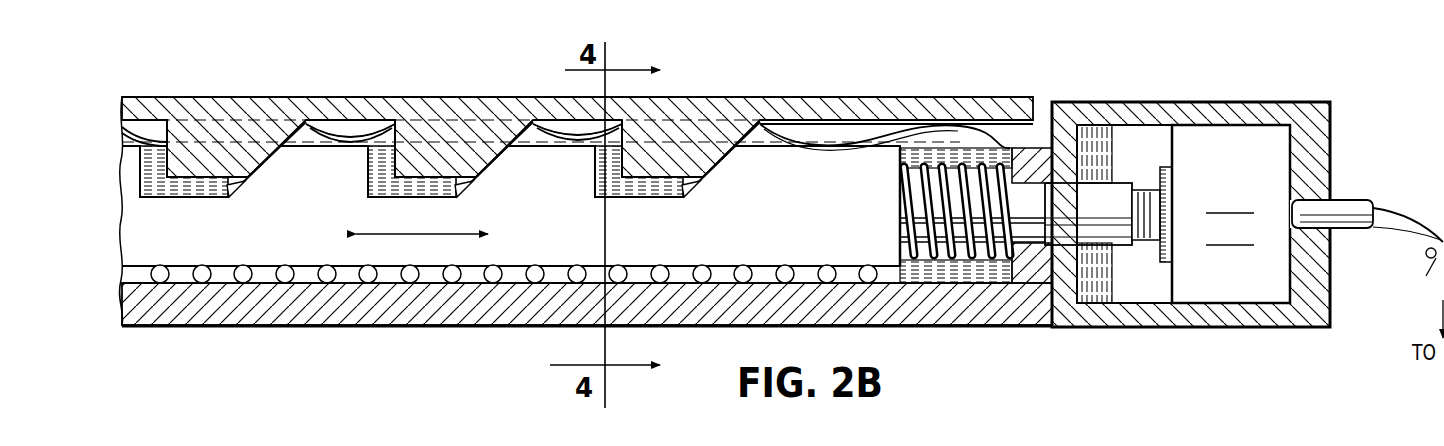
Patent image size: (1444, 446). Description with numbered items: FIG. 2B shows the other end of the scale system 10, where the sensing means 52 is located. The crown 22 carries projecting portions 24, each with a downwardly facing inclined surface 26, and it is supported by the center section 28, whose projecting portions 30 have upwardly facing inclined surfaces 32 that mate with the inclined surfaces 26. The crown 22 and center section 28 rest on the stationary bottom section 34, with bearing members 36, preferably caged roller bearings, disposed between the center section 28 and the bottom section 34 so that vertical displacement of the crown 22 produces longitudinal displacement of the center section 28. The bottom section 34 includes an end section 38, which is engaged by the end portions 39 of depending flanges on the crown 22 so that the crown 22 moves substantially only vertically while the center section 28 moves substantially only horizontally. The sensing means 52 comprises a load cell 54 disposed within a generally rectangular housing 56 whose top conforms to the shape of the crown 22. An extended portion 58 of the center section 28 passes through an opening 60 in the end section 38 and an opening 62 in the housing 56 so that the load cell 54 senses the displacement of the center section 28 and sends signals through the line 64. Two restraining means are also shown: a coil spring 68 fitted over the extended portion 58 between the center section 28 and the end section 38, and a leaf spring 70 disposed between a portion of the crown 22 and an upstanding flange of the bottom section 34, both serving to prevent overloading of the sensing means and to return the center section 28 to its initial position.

The scale system 10 is at (259, 94).
The crown 22 is at (462, 97).
The projecting portion 24 is at (200, 187).
The downwardly facing inclined surface 26 is at (262, 165).
The center section 28 is at (660, 241).
The projecting portion 30 is at (343, 152).
The upwardly facing inclined surface 32 is at (235, 192).
The bottom section 34 is at (272, 312).
The bearing members 36 is at (832, 265).
The end section 38 is at (1040, 143).
The end portions 39 is at (932, 118).
The sensing means 52 is at (1241, 94).
The load cell 54 is at (1250, 287).
The housing 56 is at (1153, 103).
The extended portion 58 is at (1115, 236).
The opening 60 is at (1049, 288).
The opening 62 is at (1067, 197).
The line 64 is at (1350, 207).
The coil spring 68 is at (972, 252).
The leaf spring 70 is at (777, 133).